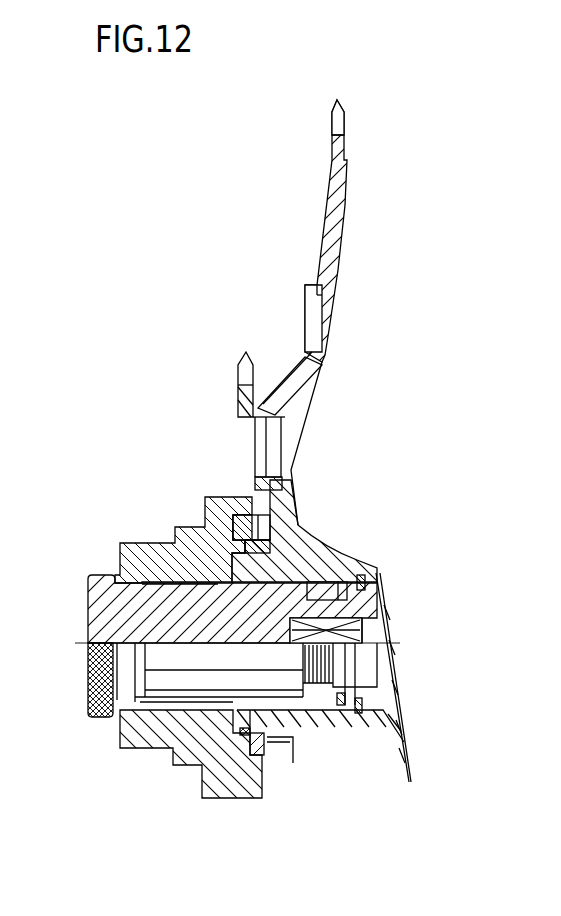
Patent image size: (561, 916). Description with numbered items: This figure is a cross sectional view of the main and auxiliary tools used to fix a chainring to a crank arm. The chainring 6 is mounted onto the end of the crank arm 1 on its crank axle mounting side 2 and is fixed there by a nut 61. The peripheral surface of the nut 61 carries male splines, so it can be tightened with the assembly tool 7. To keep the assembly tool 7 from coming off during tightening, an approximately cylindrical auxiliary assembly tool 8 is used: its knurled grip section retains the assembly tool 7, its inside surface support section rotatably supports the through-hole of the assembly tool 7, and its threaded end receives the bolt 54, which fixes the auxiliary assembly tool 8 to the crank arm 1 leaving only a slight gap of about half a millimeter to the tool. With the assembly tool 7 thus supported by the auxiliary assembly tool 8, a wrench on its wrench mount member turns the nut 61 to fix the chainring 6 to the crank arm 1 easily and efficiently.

The crank arm 1 is at (387, 770).
The crank axle mounting side 2 is at (323, 562).
The chainring 6 is at (327, 240).
The assembly tool 7 is at (190, 527).
The auxiliary assembly tool 8 is at (88, 690).
The bolt 54 is at (377, 610).
The nut 61 is at (250, 512).